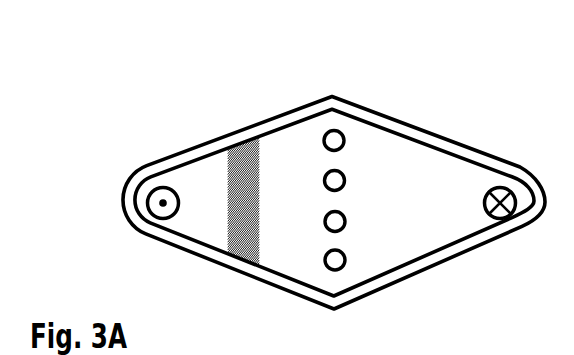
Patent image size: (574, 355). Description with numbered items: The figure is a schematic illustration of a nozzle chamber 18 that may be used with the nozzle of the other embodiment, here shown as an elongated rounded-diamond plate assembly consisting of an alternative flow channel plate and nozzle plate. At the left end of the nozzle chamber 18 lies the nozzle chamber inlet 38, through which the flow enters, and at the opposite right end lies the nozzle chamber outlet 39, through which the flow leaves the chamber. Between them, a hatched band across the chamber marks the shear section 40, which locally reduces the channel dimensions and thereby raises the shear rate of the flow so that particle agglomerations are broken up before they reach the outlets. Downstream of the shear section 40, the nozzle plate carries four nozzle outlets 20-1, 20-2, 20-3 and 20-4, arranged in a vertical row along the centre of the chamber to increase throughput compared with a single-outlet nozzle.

The nozzle chamber 18 is at (295, 257).
The nozzle chamber inlet 38 is at (178, 192).
The nozzle chamber outlet 39 is at (486, 191).
The shear section 40 is at (226, 232).
The nozzle outlet 20-1 is at (346, 136).
The nozzle outlet 20-2 is at (349, 182).
The nozzle outlet 20-3 is at (346, 223).
The nozzle outlet 20-4 is at (346, 268).